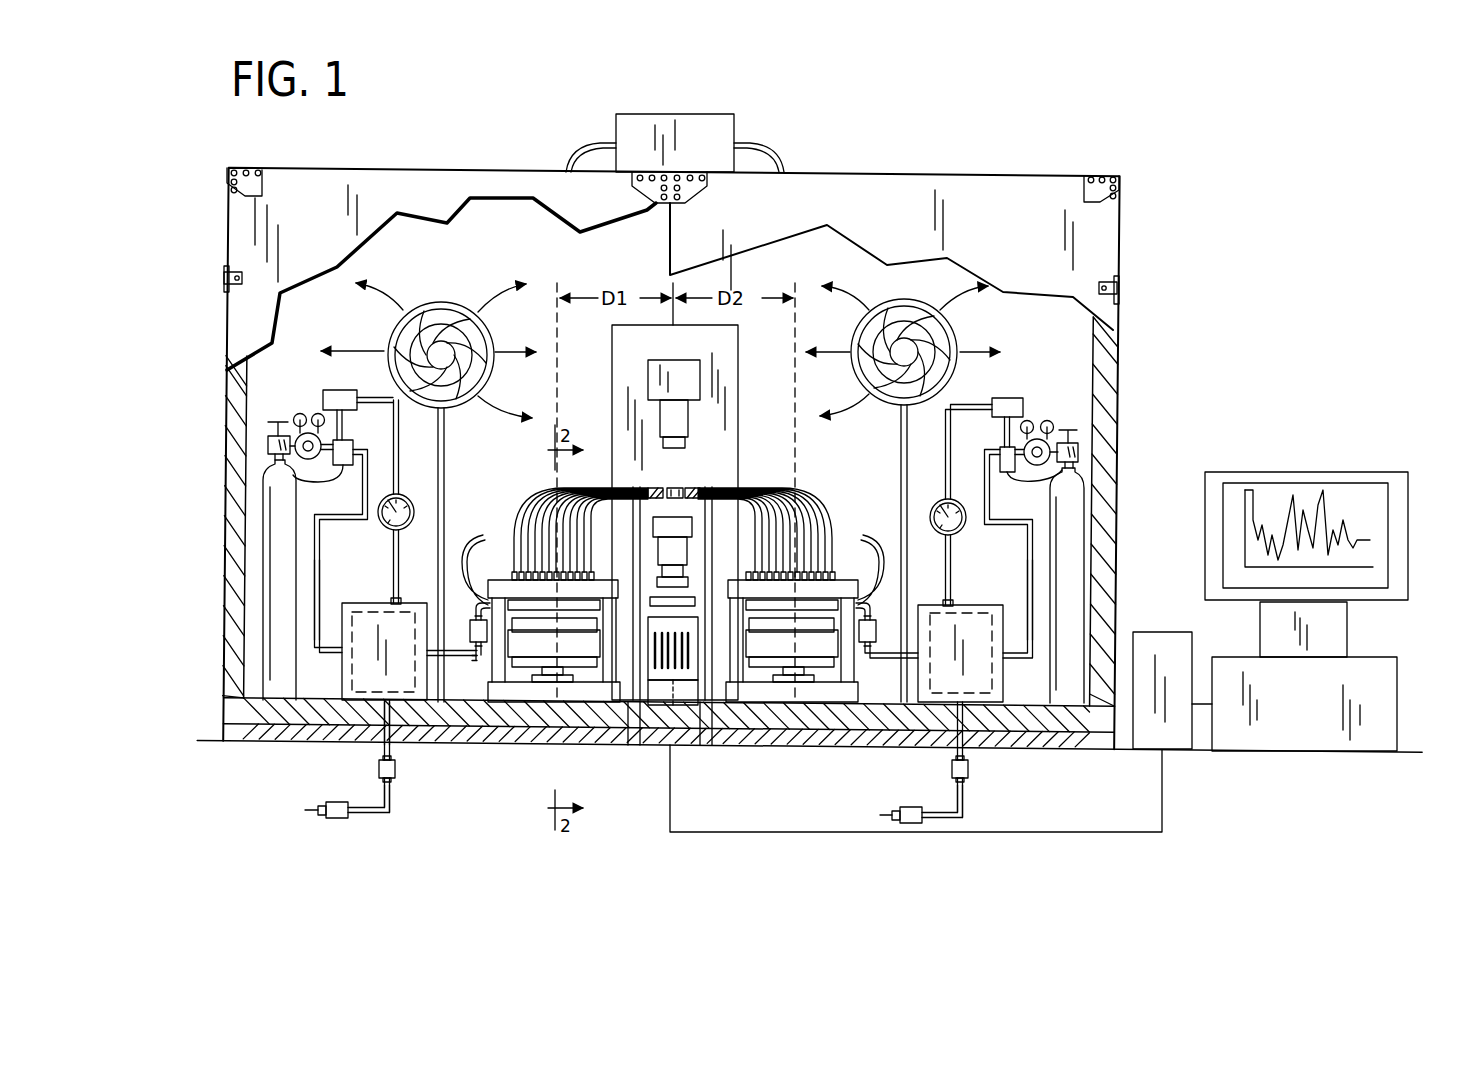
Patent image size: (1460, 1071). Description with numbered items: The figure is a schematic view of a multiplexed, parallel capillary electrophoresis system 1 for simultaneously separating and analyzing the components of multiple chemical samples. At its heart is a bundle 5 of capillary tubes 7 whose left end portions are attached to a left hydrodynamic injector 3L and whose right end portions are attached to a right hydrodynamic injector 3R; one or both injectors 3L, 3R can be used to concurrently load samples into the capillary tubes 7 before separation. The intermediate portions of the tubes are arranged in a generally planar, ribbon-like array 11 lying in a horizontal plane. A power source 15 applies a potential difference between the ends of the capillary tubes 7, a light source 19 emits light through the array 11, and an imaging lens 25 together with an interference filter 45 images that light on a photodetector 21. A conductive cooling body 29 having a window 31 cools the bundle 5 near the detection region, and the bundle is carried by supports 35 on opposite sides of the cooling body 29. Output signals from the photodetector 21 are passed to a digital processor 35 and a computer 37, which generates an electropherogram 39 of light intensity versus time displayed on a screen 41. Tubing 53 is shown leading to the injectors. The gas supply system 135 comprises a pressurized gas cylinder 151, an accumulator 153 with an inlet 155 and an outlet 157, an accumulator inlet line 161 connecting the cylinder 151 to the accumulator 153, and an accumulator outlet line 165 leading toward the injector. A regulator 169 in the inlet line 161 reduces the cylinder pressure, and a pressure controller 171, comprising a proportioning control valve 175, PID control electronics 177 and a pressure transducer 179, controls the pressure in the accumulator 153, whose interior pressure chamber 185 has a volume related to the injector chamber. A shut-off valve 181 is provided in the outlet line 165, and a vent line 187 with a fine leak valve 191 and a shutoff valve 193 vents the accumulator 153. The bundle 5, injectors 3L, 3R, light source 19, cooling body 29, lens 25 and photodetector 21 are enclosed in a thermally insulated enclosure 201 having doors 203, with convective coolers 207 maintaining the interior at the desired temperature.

The multiplexed capillary electrophoresis system 1 is at (1166, 150).
The left hydrodynamic injector 3L is at (538, 697).
The right hydrodynamic injector 3R is at (817, 695).
The bundle of capillary tubes 5 is at (820, 490).
The capillary tubes 7 is at (518, 547).
The planar ribbon-like array 11 is at (700, 488).
The power source 15 is at (696, 114).
The light source 19 is at (690, 362).
The photodetector 21 is at (657, 694).
The imaging lens 25 is at (652, 514).
The cooling body 29 is at (655, 488).
The window 31 is at (668, 488).
The supports / digital processor 35 is at (632, 697).
The computer 37 is at (1318, 752).
The electropherogram 39 is at (1332, 516).
The screen 41 is at (1410, 522).
The interference filter 45 is at (697, 600).
The tubing 53 is at (573, 160).
The gas supply system 135 is at (262, 622).
The cylinder 151 is at (265, 565).
The accumulator 153 is at (340, 678).
The accumulator inlet 155 is at (340, 650).
The accumulator outlet 157 is at (463, 700).
The accumulator inlet line 161 is at (314, 600).
The accumulator outlet line 165 is at (483, 700).
The regulator 169 is at (293, 455).
The pressure controller 171 is at (320, 399).
The proportioning control valve 175 is at (290, 478).
The PID control electronics 177 is at (322, 406).
The pressure transducer 179 is at (386, 528).
The shut-off valve 181 is at (482, 645).
The pressure chamber 185 is at (335, 722).
The vent line 187 is at (390, 816).
The fine leak valve 191 is at (377, 768).
The shutoff valve 193 is at (335, 824).
The thermally insulated enclosure 201 is at (1118, 230).
The doors 203 is at (318, 185).
The convective coolers 207 is at (437, 298).